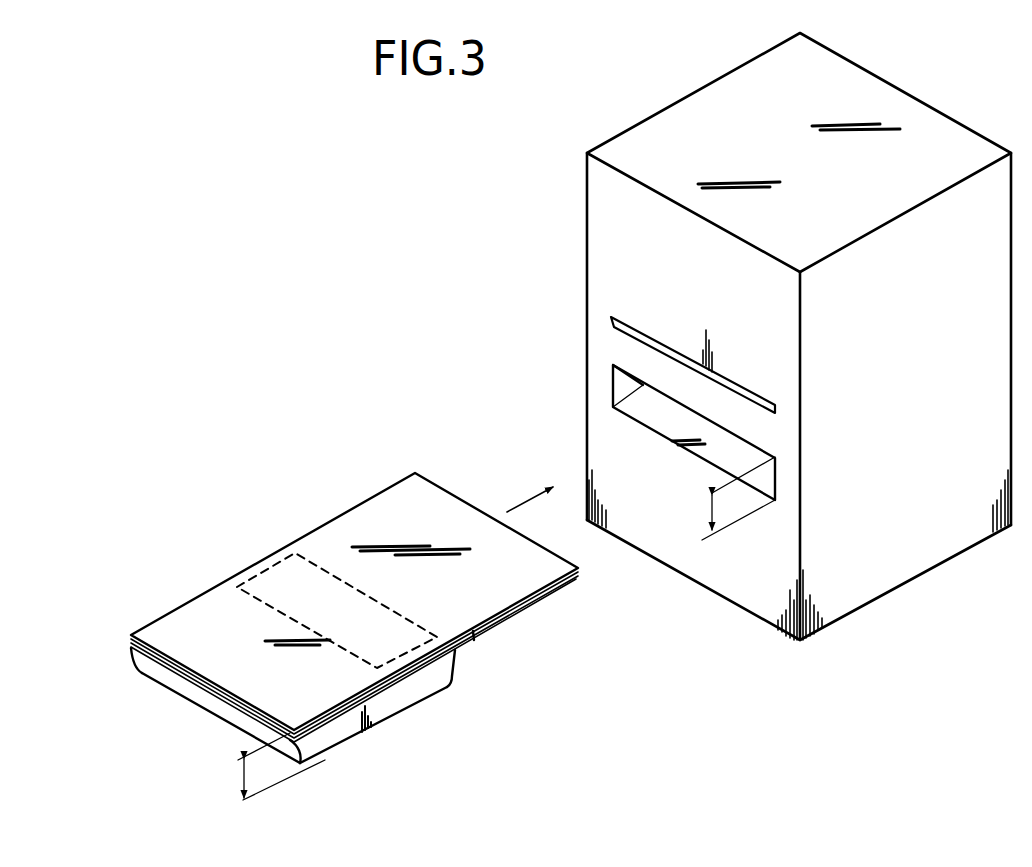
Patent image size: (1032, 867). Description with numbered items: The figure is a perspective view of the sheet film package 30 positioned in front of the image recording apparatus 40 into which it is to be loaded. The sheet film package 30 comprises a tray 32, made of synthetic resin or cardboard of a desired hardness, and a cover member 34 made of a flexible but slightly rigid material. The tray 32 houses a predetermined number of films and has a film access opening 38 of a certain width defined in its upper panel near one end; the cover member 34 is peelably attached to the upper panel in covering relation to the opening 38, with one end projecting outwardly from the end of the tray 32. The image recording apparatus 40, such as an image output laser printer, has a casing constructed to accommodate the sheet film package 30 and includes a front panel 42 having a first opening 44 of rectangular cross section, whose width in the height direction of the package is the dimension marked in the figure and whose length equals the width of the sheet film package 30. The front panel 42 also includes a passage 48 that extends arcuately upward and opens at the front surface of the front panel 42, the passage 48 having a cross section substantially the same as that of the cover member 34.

The sheet film package 30 is at (181, 606).
The tray 32 is at (415, 691).
The cover member 34 is at (380, 516).
The film access opening 38 is at (285, 573).
The image recording apparatus 40 is at (571, 272).
The front panel 42 is at (722, 572).
The first opening 44 is at (628, 394).
The passage 48 is at (610, 318).